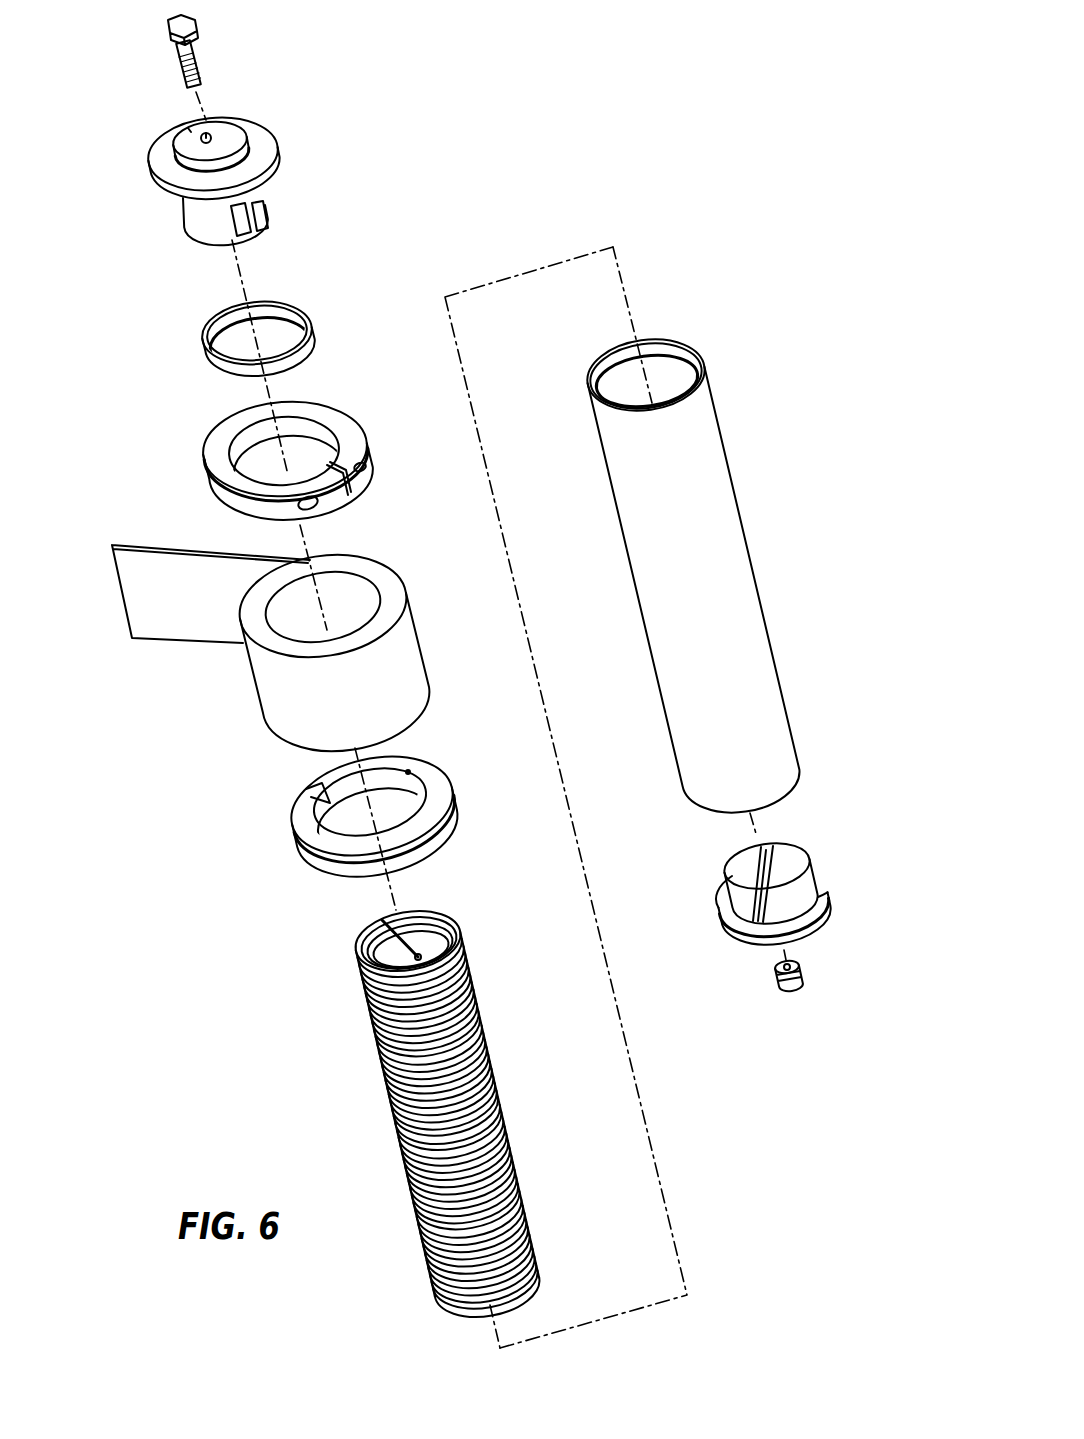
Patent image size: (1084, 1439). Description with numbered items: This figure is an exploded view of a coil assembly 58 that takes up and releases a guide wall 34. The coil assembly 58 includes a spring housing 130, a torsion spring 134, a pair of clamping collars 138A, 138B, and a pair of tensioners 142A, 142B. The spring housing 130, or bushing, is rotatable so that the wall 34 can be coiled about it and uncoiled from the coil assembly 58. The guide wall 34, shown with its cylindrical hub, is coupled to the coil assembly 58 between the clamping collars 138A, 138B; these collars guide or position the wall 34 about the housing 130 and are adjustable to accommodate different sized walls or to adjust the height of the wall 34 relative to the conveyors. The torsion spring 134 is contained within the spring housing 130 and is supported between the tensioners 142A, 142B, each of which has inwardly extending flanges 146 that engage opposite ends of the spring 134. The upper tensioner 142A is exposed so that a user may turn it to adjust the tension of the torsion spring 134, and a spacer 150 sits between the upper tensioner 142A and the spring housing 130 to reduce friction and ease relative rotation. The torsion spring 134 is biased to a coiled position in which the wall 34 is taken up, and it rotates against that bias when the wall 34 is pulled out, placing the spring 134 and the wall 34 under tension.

The coil assembly 58 is at (537, 135).
The upper tensioner 142A is at (260, 137).
The inwardly extending flanges 146 is at (270, 205).
The spacer 150 is at (283, 302).
The clamping collar 138A is at (217, 458).
The guide wall 34 is at (212, 622).
The clamping collar 138B is at (300, 821).
The torsion spring 134 is at (365, 1040).
The spring housing 130 is at (710, 470).
The lower tensioner 142B is at (825, 920).